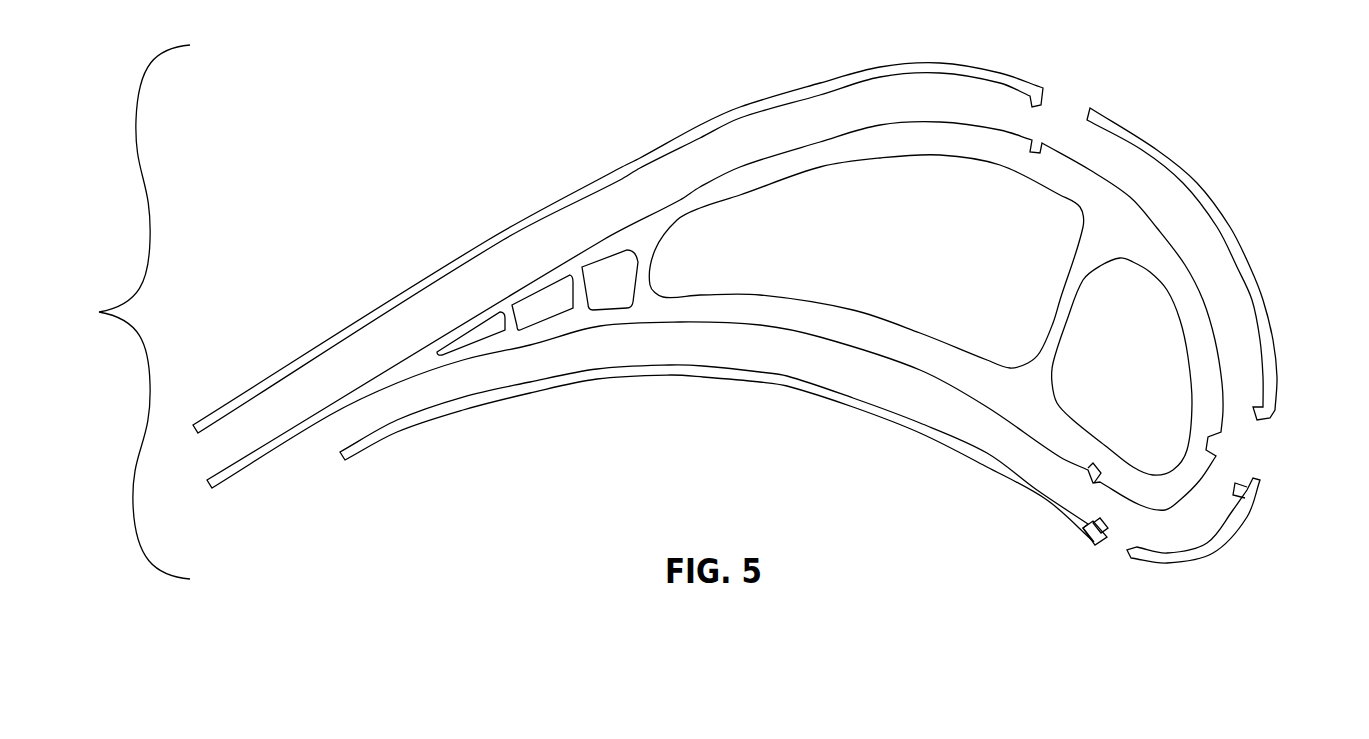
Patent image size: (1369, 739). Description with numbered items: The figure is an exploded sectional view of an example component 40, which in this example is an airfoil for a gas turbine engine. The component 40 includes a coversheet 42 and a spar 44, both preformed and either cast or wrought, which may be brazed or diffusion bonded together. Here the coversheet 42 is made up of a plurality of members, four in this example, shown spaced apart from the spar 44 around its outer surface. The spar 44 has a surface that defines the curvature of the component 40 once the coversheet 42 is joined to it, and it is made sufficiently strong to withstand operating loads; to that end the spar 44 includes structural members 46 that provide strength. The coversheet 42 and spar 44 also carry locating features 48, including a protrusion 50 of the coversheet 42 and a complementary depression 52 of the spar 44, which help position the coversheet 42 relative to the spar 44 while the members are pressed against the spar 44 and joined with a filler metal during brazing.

The component 40 is at (99, 312).
The coversheet 42 is at (587, 187).
The spar 44 is at (1093, 197).
The structural members 46 is at (520, 328).
The locating features 48 is at (1105, 528).
The protrusion 50 is at (1087, 537).
The depression 52 is at (1088, 480).